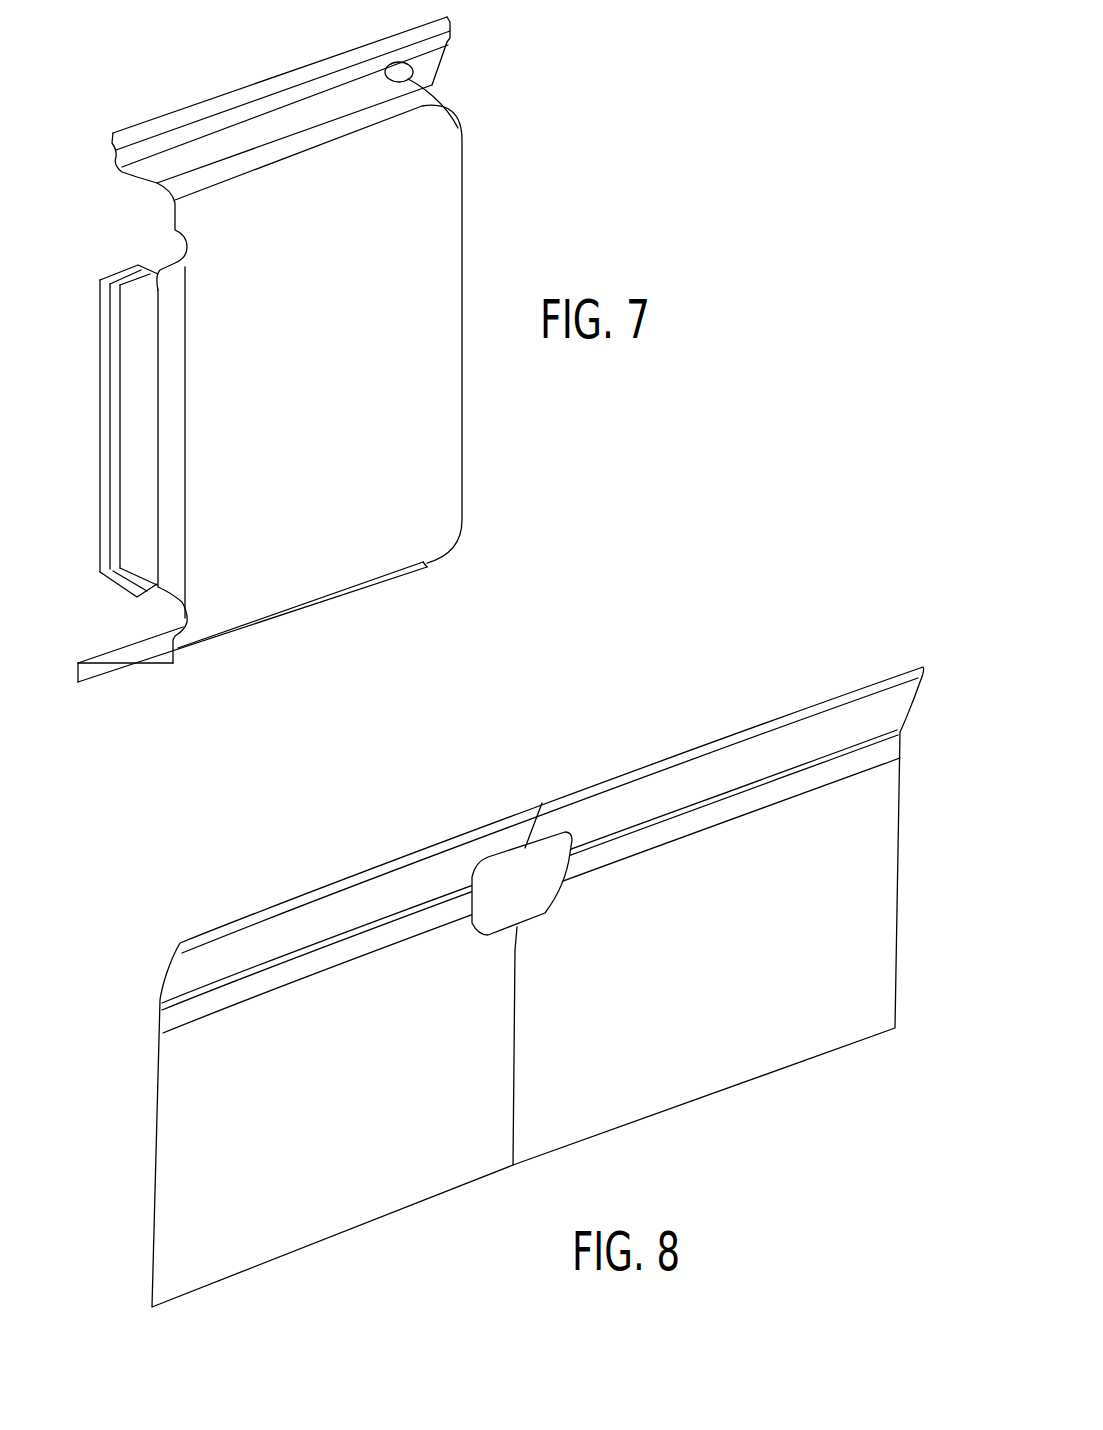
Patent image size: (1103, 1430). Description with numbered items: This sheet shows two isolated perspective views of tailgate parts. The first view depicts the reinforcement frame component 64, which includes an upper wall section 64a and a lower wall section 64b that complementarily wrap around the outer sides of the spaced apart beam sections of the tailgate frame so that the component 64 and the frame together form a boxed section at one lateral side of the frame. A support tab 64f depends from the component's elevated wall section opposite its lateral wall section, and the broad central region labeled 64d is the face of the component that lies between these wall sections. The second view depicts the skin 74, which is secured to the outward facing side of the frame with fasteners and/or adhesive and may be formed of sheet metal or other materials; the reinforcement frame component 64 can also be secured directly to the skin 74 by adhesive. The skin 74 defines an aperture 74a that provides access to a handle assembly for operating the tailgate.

In FIG. 7, the reinforcement frame component 64 is at (500, 472).
In FIG. 7, the upper wall section 64a is at (283, 123).
In FIG. 7, the lower wall section 64b is at (155, 652).
In FIG. 7, the main body panel 64d is at (347, 393).
In FIG. 7, the support tab 64f is at (137, 400).
In FIG. 8, the skin 74 is at (118, 1195).
In FIG. 8, the aperture 74a is at (478, 875).